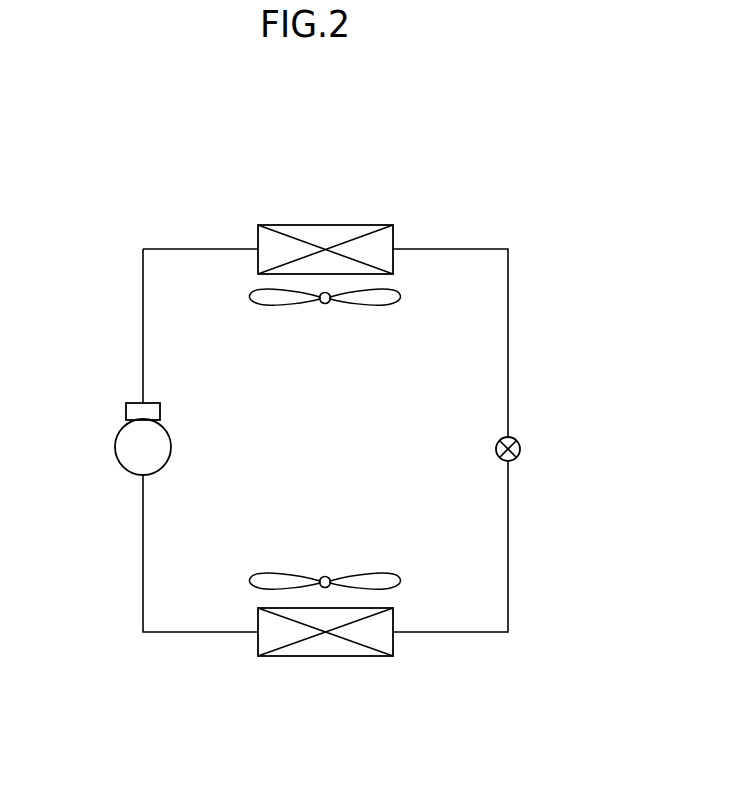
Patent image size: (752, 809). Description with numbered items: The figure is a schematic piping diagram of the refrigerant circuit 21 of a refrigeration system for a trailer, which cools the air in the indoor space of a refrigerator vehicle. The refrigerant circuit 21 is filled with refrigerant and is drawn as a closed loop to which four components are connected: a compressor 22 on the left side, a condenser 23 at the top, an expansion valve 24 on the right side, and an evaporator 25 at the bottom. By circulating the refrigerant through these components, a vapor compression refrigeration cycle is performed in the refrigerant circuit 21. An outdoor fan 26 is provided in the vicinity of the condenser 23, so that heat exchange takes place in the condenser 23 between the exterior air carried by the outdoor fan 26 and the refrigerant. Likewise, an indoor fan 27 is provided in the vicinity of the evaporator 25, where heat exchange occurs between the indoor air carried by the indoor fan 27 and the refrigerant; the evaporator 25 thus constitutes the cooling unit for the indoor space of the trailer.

The refrigerant circuit 21 is at (455, 162).
The compressor 22 is at (115, 443).
The condenser 23 is at (315, 225).
The expansion valve 24 is at (521, 449).
The evaporator 25 is at (315, 656).
The outdoor fan 26 is at (370, 307).
The indoor fan 27 is at (370, 572).